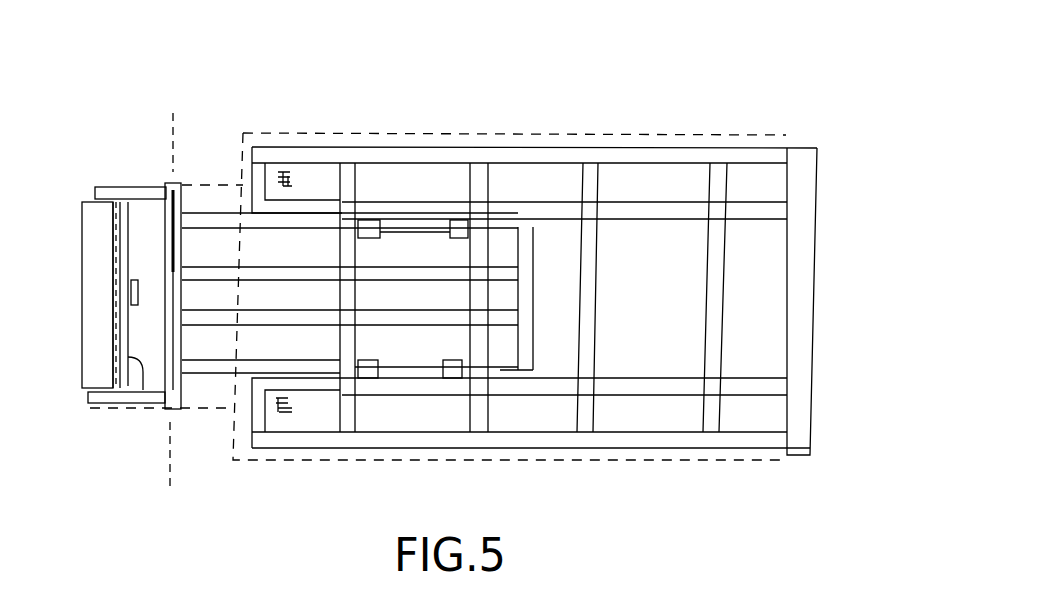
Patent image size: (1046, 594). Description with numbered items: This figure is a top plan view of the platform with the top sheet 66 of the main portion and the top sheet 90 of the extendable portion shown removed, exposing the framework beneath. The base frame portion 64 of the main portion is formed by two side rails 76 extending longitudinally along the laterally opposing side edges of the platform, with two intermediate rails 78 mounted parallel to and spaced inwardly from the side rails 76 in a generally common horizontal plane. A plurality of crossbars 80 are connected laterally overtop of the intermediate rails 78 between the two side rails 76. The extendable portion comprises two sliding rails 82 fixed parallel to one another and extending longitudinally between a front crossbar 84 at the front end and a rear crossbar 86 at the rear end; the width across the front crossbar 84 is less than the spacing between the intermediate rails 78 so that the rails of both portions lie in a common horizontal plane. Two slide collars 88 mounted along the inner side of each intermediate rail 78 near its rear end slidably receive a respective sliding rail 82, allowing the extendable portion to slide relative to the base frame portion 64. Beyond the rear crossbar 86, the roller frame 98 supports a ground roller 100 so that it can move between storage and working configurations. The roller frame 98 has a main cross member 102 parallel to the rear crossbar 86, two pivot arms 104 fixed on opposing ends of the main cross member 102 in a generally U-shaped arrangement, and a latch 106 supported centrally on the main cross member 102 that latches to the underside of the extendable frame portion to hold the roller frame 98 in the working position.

The base frame portion 64 is at (827, 84).
The top sheet 66 is at (637, 124).
The side rails 76 is at (690, 148).
The intermediate rails 78 is at (633, 222).
The crossbars 80 is at (815, 276).
The sliding rails 82 is at (280, 235).
The front crossbar 84 is at (537, 301).
The rear crossbar 86 is at (183, 183).
The slide collars 88 is at (365, 241).
The top sheet 90 is at (211, 419).
The roller frame 98 is at (124, 92).
The ground roller 100 is at (78, 295).
The main cross member 102 is at (140, 396).
The pivot arms 104 is at (103, 185).
The latch 106 is at (140, 288).